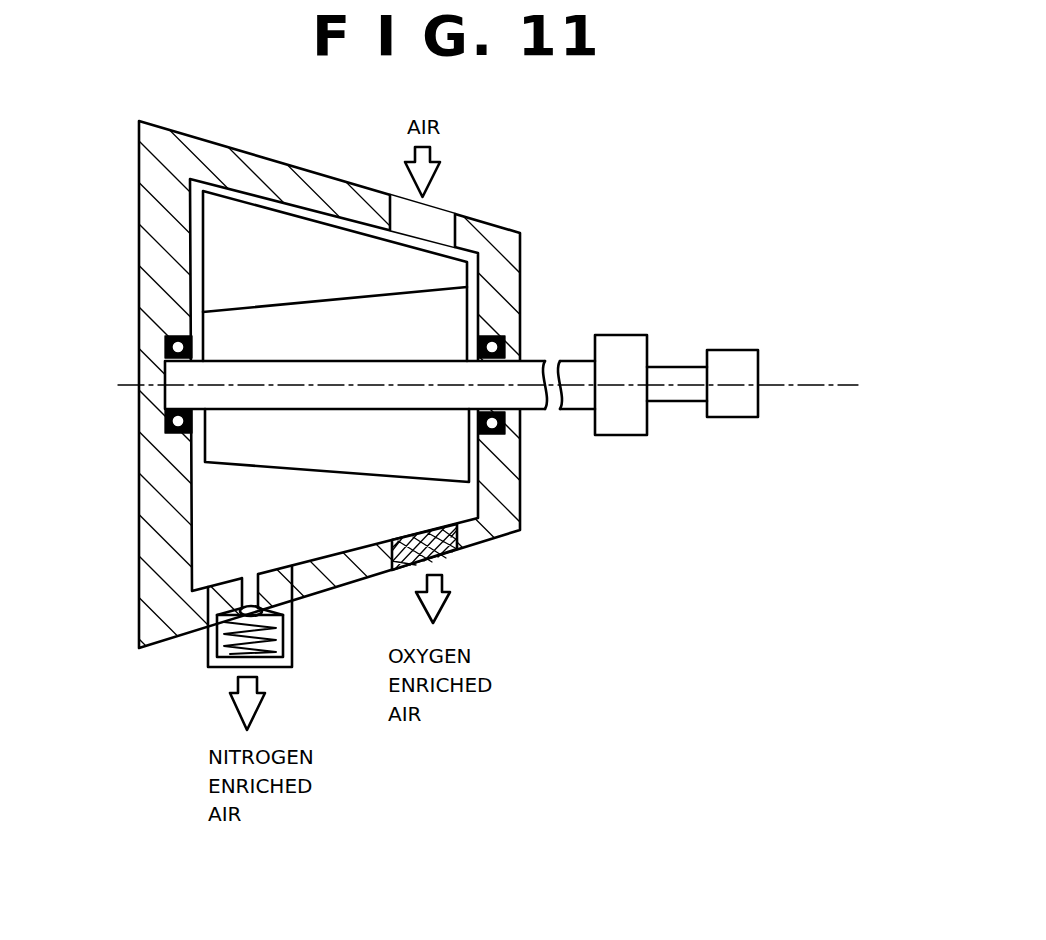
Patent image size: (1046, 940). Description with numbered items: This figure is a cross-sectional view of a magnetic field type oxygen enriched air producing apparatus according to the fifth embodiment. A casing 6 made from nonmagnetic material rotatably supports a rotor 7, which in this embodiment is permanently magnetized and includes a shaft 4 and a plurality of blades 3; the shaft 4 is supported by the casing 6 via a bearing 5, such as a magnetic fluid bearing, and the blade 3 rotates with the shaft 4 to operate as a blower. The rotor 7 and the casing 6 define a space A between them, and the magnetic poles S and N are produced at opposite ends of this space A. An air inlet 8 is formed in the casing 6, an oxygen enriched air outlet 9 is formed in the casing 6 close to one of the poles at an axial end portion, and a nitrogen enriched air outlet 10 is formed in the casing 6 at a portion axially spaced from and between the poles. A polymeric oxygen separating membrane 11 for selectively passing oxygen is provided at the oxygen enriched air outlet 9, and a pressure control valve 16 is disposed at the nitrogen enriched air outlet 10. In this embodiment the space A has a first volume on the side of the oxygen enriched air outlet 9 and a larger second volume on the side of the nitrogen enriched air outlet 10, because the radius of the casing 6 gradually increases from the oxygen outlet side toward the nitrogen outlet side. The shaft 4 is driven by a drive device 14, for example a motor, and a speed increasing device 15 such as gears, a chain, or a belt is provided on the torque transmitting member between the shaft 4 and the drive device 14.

The blade 3 is at (276, 247).
The shaft 4 is at (527, 400).
The bearing 5 is at (498, 335).
The casing 6 is at (155, 218).
The rotor 7 is at (432, 318).
The air inlet 8 is at (398, 203).
The oxygen enriched air outlet 9 is at (448, 550).
The nitrogen enriched air outlet 10 is at (250, 584).
The polymeric oxygen separating membrane 11 is at (405, 570).
The drive device 14 is at (733, 350).
The speed increasing device 15 is at (620, 335).
The pressure control valve 16 is at (213, 623).
The space A is at (450, 498).